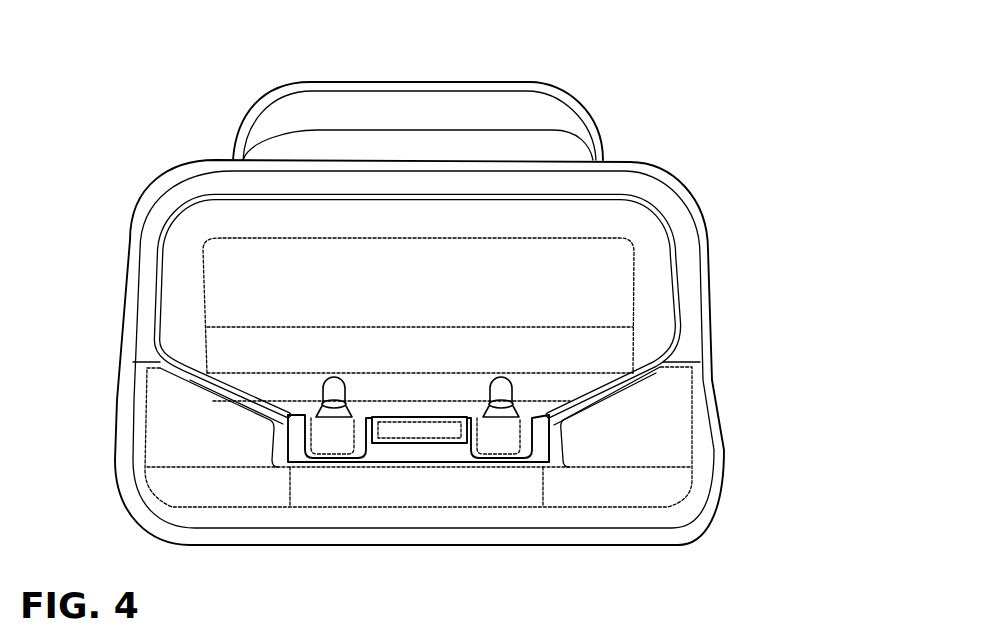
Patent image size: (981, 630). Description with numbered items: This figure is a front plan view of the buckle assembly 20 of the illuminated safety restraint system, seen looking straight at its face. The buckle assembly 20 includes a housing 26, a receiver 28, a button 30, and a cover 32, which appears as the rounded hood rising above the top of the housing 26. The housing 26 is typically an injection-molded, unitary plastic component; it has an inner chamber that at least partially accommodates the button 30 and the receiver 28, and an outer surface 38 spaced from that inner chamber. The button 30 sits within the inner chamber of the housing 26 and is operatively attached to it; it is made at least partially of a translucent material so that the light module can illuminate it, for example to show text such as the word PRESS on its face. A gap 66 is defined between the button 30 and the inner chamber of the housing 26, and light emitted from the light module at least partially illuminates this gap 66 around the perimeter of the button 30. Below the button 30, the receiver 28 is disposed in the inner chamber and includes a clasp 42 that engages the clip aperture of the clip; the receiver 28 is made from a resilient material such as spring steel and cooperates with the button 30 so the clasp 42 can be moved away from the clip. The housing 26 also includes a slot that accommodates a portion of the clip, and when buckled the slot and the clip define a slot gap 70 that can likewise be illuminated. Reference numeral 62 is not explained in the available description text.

The buckle assembly 20 is at (426, 304).
The housing 26 is at (688, 298).
The receiver 28 is at (430, 430).
The button 30 is at (617, 262).
The cover 32 is at (545, 114).
The outer surface 38 is at (693, 197).
The clasp 42 is at (420, 436).
The lip 62 is at (413, 194).
The gap 66 is at (187, 203).
The slot gap 70 is at (538, 443).